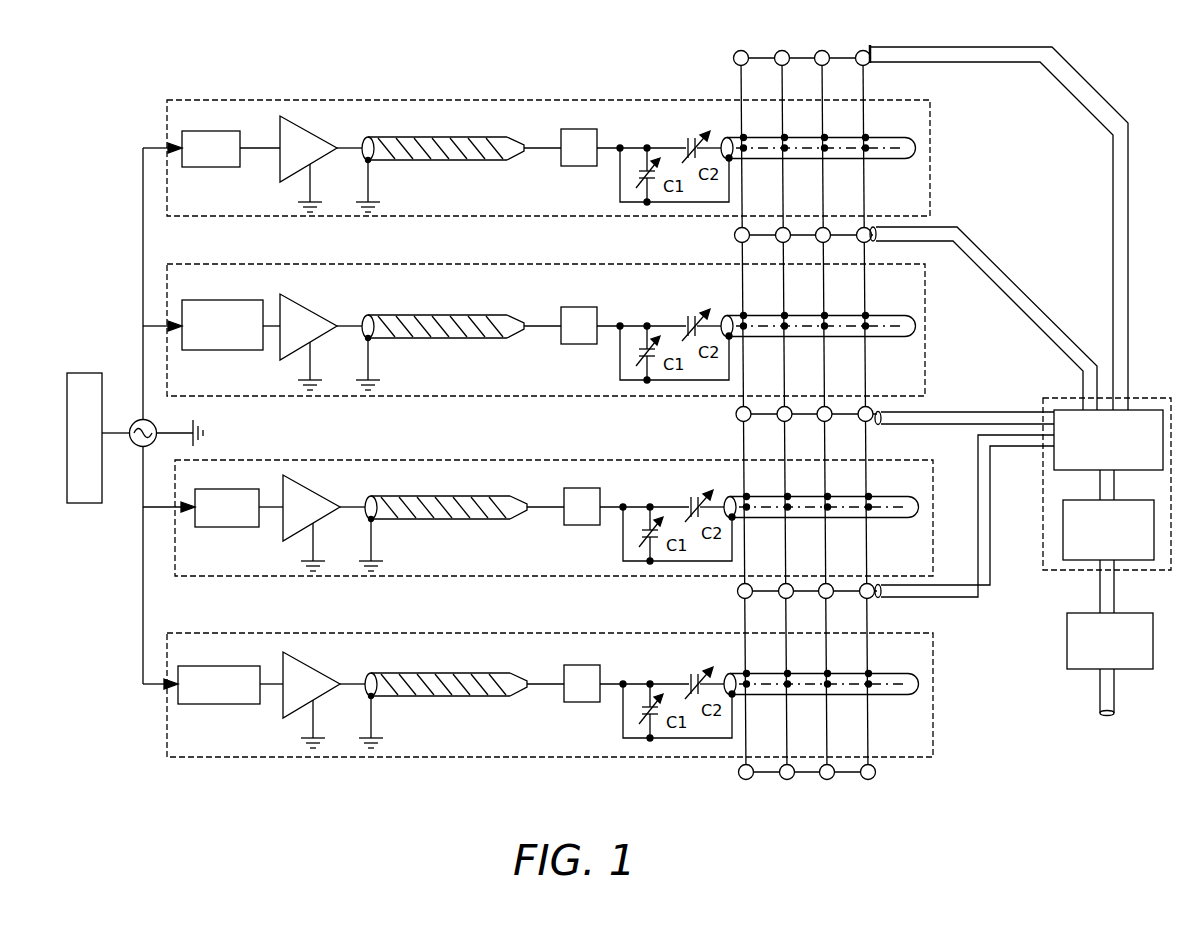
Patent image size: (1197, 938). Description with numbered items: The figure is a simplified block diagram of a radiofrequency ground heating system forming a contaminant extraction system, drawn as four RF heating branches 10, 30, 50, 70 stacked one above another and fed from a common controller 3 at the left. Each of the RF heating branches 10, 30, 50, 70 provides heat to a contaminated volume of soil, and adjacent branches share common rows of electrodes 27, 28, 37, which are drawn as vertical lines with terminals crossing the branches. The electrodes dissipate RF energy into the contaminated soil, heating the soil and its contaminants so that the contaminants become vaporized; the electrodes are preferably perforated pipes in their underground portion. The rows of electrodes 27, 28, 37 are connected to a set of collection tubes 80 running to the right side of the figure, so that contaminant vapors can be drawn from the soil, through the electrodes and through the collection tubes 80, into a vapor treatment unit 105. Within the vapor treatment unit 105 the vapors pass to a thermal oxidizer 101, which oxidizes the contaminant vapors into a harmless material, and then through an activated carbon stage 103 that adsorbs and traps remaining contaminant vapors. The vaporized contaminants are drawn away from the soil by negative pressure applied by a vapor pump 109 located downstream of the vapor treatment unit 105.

The controller 3 is at (92, 503).
The RF heating branch 10 is at (245, 100).
The RF heating branch 30 is at (240, 265).
The RF heating branch 50 is at (235, 460).
The RF heating branch 70 is at (243, 633).
The row of electrodes 27 is at (746, 64).
The row of electrodes 28 is at (748, 242).
The row of electrodes 37 is at (749, 421).
The collection tubes 80 is at (1097, 363).
The thermal oxidizer 101 is at (1147, 399).
The activated carbon filter 103 is at (1062, 535).
The vapor treatment unit 105 is at (1043, 505).
The vapor pump 109 is at (1067, 640).